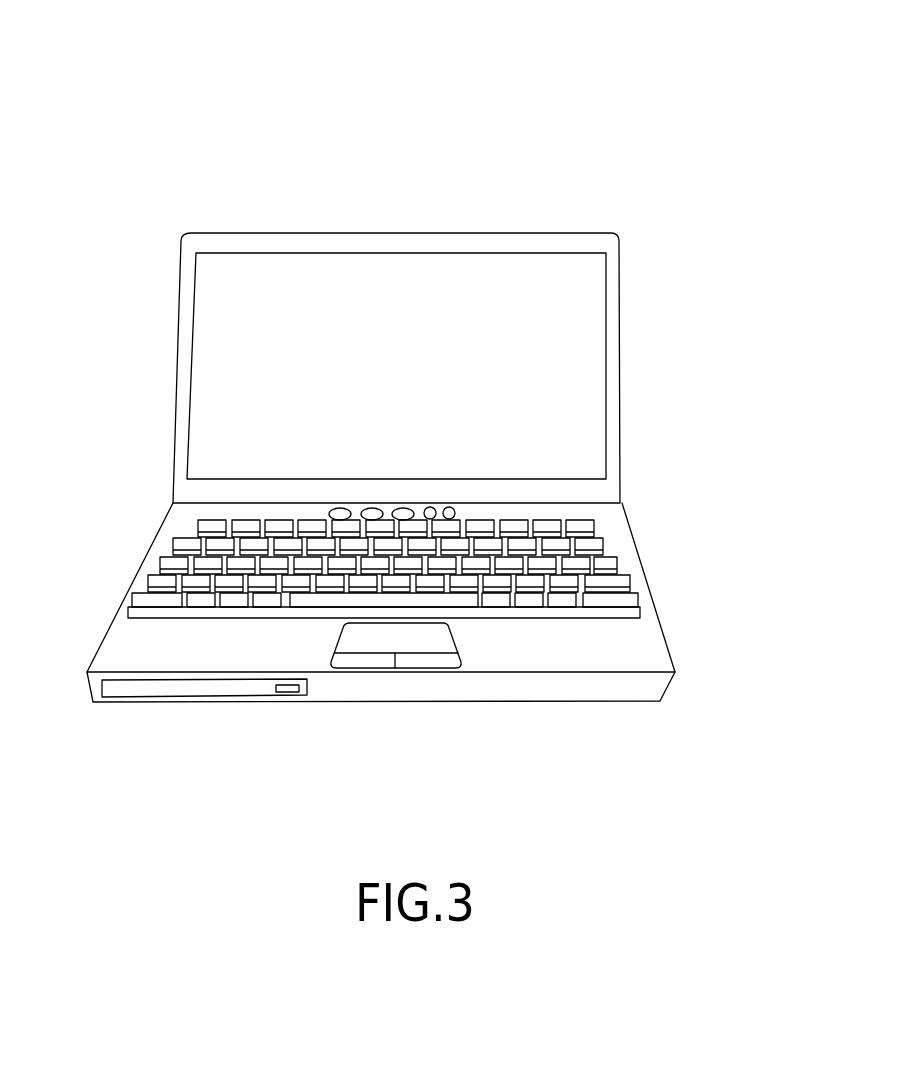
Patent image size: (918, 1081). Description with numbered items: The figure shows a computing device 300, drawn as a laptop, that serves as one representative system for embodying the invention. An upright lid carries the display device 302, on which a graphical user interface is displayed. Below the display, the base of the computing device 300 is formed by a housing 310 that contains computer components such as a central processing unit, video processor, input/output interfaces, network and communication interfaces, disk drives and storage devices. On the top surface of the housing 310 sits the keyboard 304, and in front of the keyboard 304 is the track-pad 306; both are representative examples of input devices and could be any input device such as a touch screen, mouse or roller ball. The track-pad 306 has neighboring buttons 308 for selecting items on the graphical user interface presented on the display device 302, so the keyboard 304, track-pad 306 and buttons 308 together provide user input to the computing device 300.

The computing device 300 is at (146, 82).
The display device 302 is at (502, 286).
The keyboard 304 is at (613, 582).
The track-pad 306 is at (437, 640).
The buttons 308 is at (366, 661).
The housing 310 is at (180, 518).